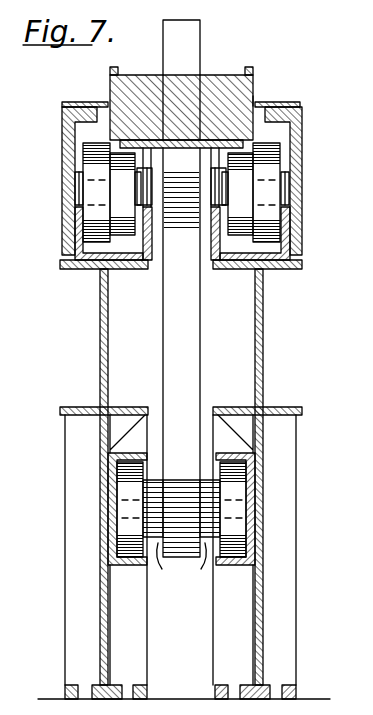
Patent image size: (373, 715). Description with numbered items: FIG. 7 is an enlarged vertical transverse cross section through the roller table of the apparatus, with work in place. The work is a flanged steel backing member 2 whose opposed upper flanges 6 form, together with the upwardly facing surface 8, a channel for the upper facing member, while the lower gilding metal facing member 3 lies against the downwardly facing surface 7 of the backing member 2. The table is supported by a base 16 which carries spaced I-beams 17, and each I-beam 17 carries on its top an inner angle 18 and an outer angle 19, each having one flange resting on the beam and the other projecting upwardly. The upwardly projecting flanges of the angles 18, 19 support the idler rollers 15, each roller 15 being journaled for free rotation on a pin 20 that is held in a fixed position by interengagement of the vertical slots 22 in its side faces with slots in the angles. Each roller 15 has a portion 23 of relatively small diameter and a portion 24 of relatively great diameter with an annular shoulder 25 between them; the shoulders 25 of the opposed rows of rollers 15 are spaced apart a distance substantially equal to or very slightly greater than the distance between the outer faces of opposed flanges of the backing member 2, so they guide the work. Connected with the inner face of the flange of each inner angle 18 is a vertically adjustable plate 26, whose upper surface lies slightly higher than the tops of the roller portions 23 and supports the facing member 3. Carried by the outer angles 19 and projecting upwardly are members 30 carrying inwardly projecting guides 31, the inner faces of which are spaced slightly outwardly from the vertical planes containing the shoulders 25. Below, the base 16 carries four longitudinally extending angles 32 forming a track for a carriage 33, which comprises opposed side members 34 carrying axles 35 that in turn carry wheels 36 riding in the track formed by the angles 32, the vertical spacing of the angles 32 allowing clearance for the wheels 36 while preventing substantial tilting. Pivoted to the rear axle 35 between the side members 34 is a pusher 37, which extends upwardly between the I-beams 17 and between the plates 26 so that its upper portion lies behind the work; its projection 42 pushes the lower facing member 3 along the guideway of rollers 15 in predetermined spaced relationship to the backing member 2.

The flanged steel backing member 2 is at (206, 90).
The gilding metal facing member 3 is at (244, 142).
The upper flanges 6 is at (110, 70).
The downwardly facing surface 7 is at (252, 100).
The upwardly facing surface 8 is at (143, 75).
The idler rollers 15 is at (85, 166).
The base 16 is at (218, 629).
The I-beams 17 is at (100, 357).
The inner angle 18 is at (125, 270).
The outer angle 19 is at (82, 270).
The pin 20 is at (98, 189).
The vertical slots 22 is at (145, 185).
The roller portion of relatively small diameter 23 is at (114, 206).
The roller portion of relatively great diameter 24 is at (115, 193).
The annular shoulder 25 is at (118, 228).
The plate 26 is at (211, 252).
The members 30 is at (62, 128).
The guides 31 is at (80, 102).
The longitudinally extending angles 32 is at (137, 453).
The carriage 33 is at (106, 525).
The side members 34 is at (182, 537).
The axles 35 is at (178, 497).
The wheels 36 is at (125, 497).
The pusher 37 is at (188, 374).
The projection 42 is at (187, 197).